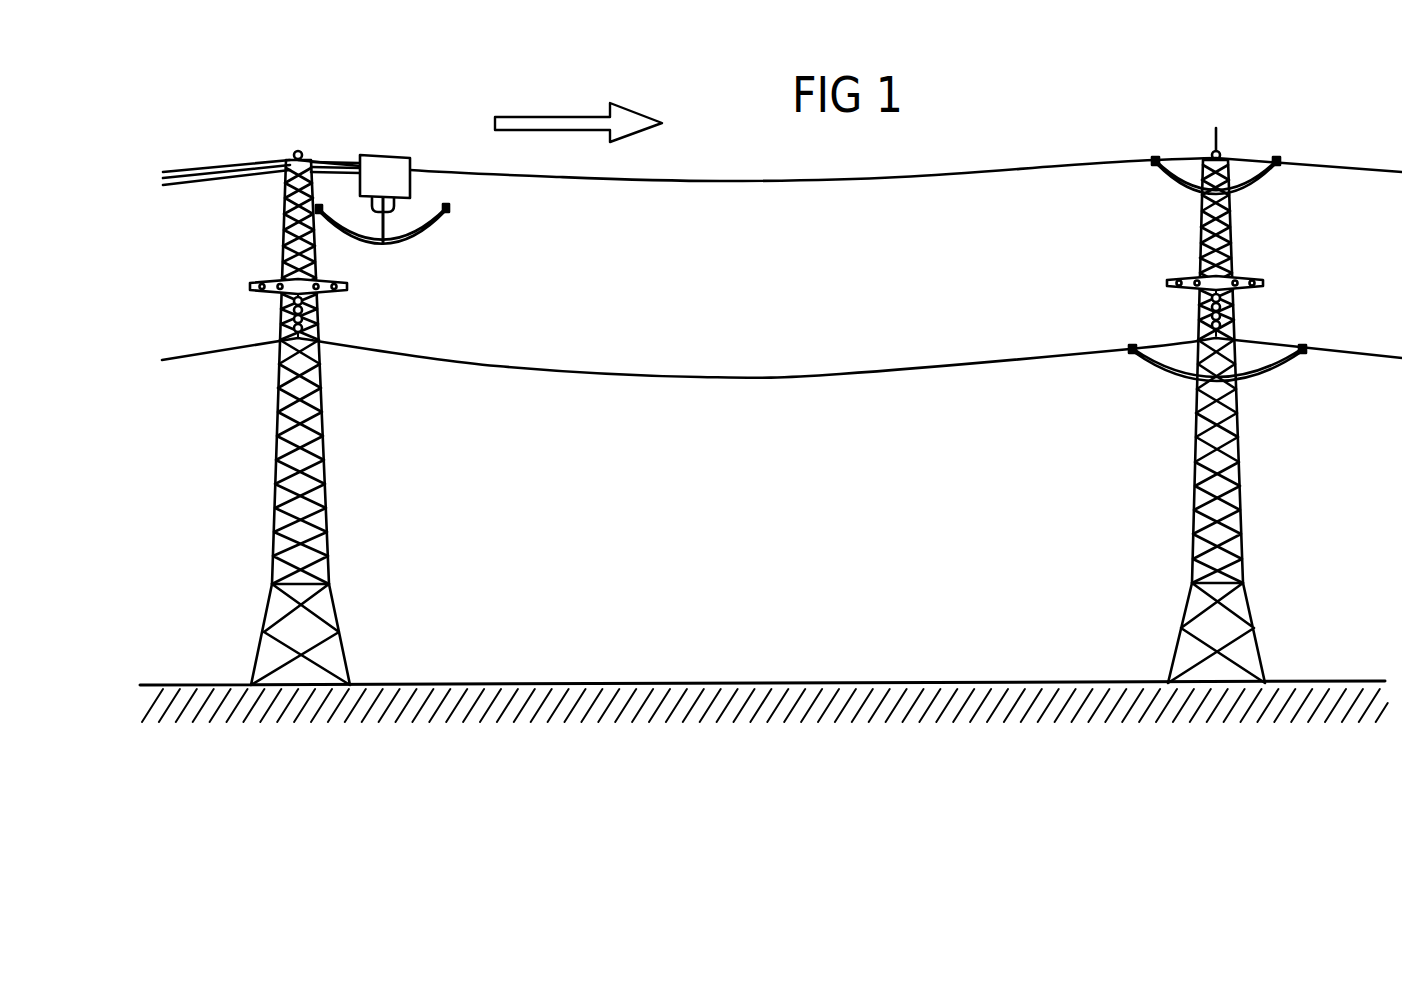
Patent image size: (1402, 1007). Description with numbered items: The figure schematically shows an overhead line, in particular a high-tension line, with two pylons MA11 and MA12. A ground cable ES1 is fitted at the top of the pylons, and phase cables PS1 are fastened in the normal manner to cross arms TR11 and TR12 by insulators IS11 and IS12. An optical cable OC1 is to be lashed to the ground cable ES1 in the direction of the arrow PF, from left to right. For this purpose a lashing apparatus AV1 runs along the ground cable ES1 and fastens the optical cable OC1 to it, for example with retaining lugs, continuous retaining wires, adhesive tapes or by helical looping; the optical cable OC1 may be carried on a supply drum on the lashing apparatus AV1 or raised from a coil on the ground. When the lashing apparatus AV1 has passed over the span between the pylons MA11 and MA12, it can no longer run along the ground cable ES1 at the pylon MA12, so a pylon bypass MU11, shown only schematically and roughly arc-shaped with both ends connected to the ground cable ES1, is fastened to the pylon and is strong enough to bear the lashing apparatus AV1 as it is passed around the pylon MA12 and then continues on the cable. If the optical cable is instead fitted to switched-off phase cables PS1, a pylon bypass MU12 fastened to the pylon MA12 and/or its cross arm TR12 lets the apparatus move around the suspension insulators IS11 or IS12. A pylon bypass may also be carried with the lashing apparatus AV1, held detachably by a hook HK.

The ground cable ES1 is at (213, 165).
The optical cable OC1 is at (228, 182).
The hook HK is at (372, 210).
The lashing apparatus AV1 is at (365, 155).
The cross arm TR11 is at (348, 283).
The insulator IS11 is at (282, 318).
The phase cable PS1 is at (500, 367).
The pylon MA11 is at (275, 508).
The arrow PF is at (552, 113).
The pylon bypass MU11 is at (1255, 183).
The cross arm TR12 is at (1165, 280).
The insulator IS12 is at (1240, 320).
The pylon bypass MU12 is at (1262, 375).
The pylon MA12 is at (1247, 512).